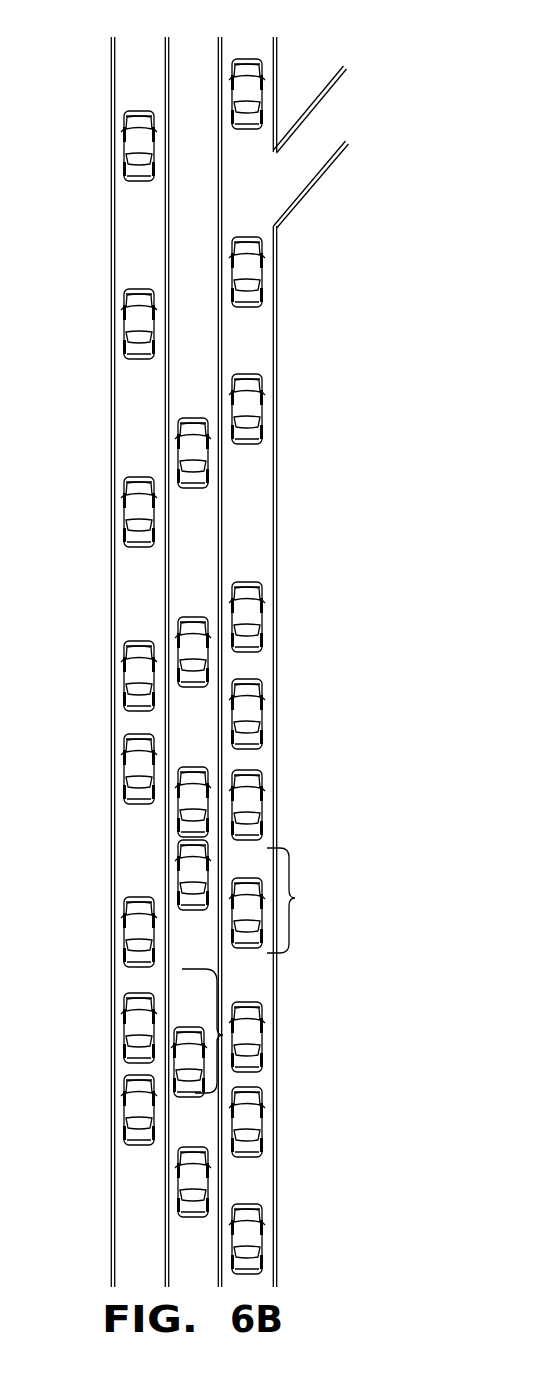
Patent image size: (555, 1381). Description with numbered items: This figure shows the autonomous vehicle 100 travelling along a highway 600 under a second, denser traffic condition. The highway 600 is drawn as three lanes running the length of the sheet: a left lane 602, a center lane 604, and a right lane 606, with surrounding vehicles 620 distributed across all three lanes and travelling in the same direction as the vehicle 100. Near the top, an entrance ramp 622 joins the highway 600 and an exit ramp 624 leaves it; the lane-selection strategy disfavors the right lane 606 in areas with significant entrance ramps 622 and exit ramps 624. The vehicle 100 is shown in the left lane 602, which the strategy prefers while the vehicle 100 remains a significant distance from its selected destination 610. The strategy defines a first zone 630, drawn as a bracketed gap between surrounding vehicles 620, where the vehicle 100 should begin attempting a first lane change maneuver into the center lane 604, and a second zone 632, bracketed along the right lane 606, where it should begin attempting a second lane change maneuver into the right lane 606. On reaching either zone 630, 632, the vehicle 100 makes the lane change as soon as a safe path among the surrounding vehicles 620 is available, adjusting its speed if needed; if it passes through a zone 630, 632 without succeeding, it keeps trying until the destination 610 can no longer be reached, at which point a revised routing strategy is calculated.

The vehicle 100 is at (137, 1113).
The highway 600 is at (322, 45).
The left lane 602 is at (138, 43).
The center lane 604 is at (197, 53).
The right lane 606 is at (258, 42).
The selected destination 610 is at (263, 190).
The surrounding vehicles 620 is at (135, 148).
The entrance ramps 622 is at (421, 665).
The exit ramps 624 is at (312, 145).
The first zone 630 is at (223, 1035).
The second zone 632 is at (295, 898).